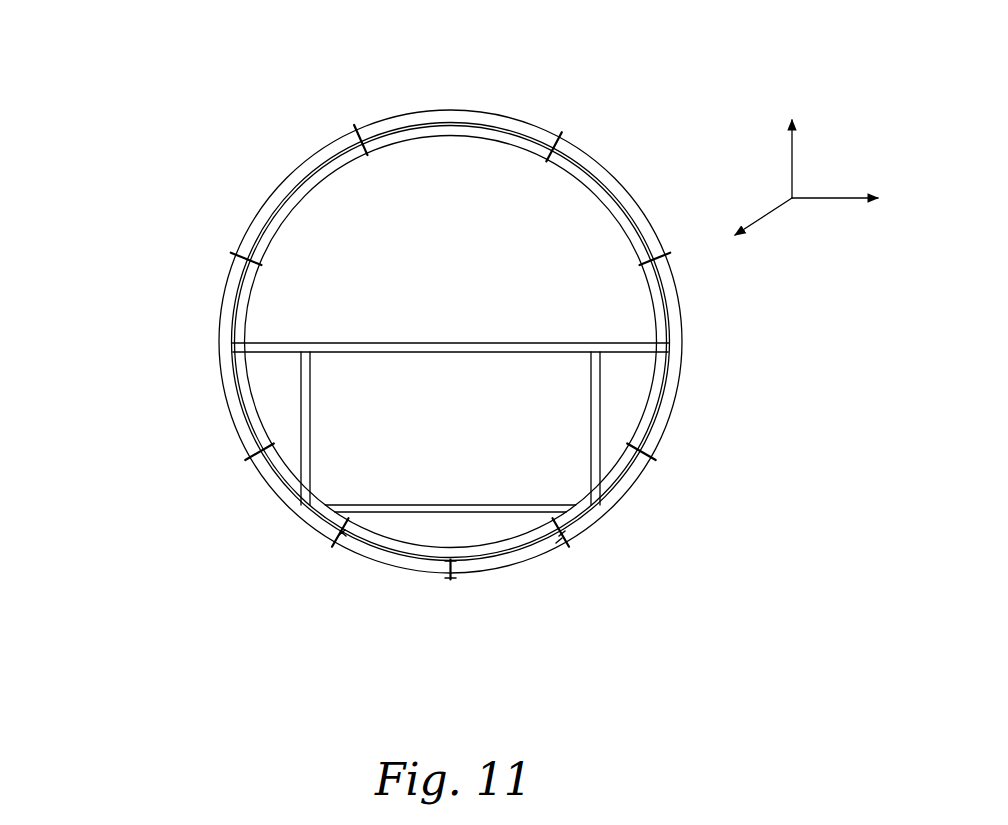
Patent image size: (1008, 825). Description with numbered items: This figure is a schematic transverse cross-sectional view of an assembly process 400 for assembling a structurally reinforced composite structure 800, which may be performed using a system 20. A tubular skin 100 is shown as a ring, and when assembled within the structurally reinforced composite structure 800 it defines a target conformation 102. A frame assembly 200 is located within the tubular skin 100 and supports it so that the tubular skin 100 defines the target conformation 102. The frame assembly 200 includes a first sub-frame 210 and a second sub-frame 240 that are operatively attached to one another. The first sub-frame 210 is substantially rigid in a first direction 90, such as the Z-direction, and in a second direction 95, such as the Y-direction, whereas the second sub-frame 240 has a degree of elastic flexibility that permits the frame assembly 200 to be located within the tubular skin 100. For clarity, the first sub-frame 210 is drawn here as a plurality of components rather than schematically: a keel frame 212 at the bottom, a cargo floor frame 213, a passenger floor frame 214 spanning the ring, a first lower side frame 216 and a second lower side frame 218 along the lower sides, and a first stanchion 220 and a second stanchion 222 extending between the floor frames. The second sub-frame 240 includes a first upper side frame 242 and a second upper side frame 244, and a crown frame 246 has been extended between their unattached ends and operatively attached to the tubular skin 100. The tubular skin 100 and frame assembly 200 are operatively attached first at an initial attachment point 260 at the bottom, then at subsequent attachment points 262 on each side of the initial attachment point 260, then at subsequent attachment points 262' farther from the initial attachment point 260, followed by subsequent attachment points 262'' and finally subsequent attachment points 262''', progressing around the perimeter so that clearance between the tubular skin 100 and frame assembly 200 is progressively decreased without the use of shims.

The assembly process 400 is at (108, 96).
The system 20 is at (108, 158).
The structurally reinforced composite structure 800 is at (93, 247).
The tubular skin 100 is at (217, 323).
The target conformation 102 is at (220, 375).
The frame assembly 200 is at (622, 366).
The first sub-frame 210 is at (451, 427).
The keel frame 212 is at (394, 552).
The cargo floor frame 213 is at (450, 486).
The passenger floor frame 214 is at (397, 352).
The first lower side frame 216 is at (253, 428).
The second lower side frame 218 is at (648, 420).
The first stanchion 220 is at (308, 425).
The second stanchion 222 is at (592, 417).
The second sub-frame 240 is at (295, 217).
The first upper side frame 242 is at (253, 287).
The second upper side frame 244 is at (627, 243).
The crown frame 246 is at (445, 137).
The initial attachment point 260 is at (450, 582).
The subsequent attachment points 262 is at (466, 560).
The subsequent attachment points 262' is at (441, 482).
The subsequent attachment points 262'' is at (436, 222).
The subsequent attachment points 262''' is at (469, 123).
The first direction 90 is at (790, 148).
The second direction 95 is at (825, 198).